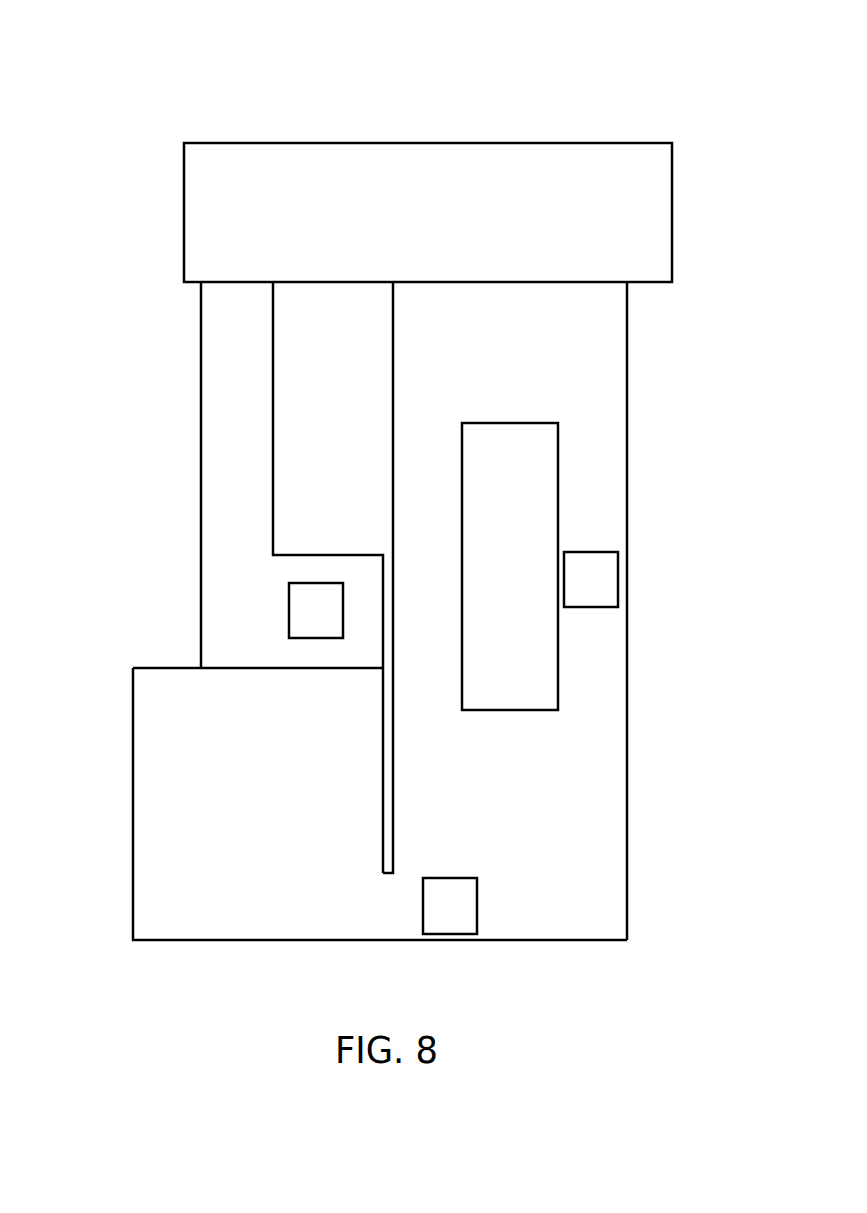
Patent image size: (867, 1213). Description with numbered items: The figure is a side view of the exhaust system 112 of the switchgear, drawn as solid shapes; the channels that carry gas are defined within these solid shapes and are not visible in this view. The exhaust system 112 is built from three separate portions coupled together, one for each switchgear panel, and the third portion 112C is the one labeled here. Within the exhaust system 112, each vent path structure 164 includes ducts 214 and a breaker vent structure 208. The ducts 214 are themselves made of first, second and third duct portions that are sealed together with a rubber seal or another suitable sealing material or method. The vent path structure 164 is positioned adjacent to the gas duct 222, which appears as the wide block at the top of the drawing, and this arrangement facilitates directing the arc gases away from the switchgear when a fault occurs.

The exhaust system 112 is at (146, 56).
The gas duct 222 is at (632, 162).
The vent path structure 164 is at (627, 342).
The breaker vent structure 208 is at (215, 400).
The third portion of exhaust system 112C is at (627, 748).
The ducts 214 is at (313, 597).